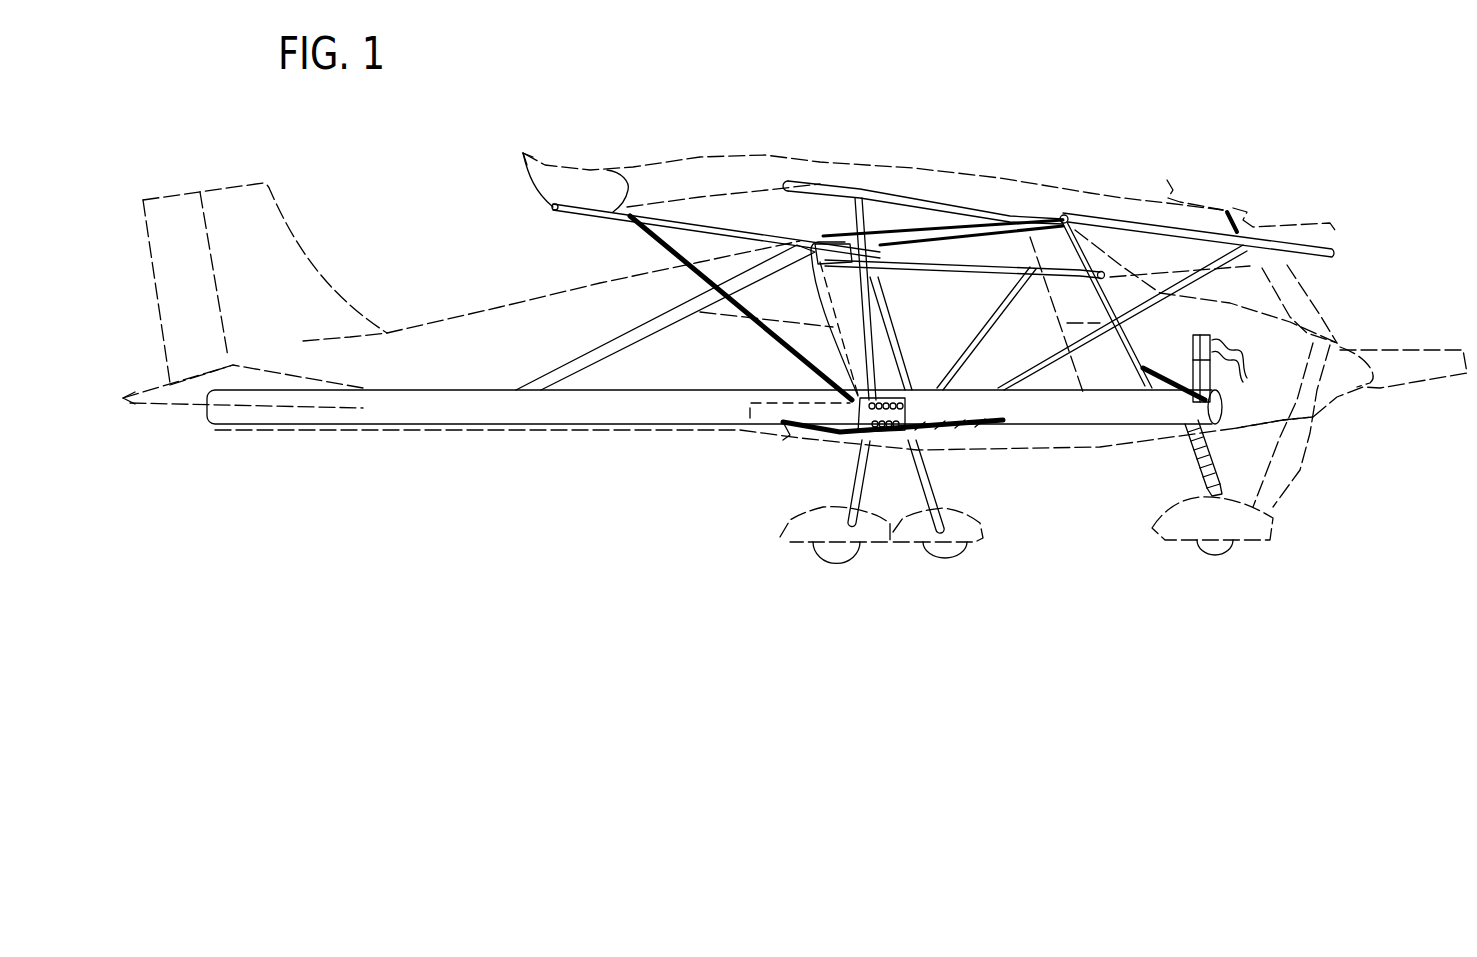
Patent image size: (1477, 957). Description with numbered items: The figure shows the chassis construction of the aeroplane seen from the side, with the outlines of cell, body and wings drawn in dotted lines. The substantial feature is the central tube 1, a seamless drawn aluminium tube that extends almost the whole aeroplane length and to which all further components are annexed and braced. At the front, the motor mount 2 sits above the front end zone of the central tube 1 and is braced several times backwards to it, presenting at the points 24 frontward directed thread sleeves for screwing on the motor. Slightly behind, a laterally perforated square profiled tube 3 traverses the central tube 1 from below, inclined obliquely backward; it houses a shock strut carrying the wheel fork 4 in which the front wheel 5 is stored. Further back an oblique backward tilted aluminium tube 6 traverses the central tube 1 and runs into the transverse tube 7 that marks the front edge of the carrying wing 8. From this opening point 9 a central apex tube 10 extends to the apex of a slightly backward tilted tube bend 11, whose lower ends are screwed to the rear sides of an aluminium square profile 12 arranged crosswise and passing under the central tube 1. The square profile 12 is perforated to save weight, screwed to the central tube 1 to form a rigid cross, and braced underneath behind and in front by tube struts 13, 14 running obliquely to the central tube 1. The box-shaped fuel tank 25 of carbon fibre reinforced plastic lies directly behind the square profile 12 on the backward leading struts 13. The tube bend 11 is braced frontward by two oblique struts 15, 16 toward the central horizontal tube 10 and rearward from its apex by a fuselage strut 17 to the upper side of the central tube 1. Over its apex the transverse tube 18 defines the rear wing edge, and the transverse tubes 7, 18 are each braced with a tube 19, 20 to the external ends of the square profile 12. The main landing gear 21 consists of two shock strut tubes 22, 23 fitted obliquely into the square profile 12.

The central tube 1 is at (597, 410).
The motor mount 2 is at (1222, 333).
The square profiled tube 3 is at (1190, 460).
The wheel fork 4 is at (1215, 493).
The front wheel 5 is at (1233, 553).
The aluminium tube 6 is at (1136, 335).
The transverse tube 7 is at (945, 205).
The carrying wing 8 is at (760, 173).
The opening point 9 is at (1075, 205).
The central apex tube 10 is at (972, 232).
The tube bend 11 is at (890, 337).
The aluminium square profile 12 is at (887, 440).
The tube strut 13 is at (783, 435).
The tube strut 14 is at (997, 437).
The oblique strut 15 is at (903, 262).
The oblique strut 16 is at (935, 262).
The fuselage strut 17 is at (617, 347).
The transverse tube 18 is at (607, 170).
The tube 19 is at (713, 310).
The tube 20 is at (866, 315).
The main landing gear 21 is at (833, 592).
The shock strut tube 22 is at (870, 467).
The shock strut tube 23 is at (925, 458).
The points 24 is at (1215, 390).
The fuel tank 25 is at (752, 412).